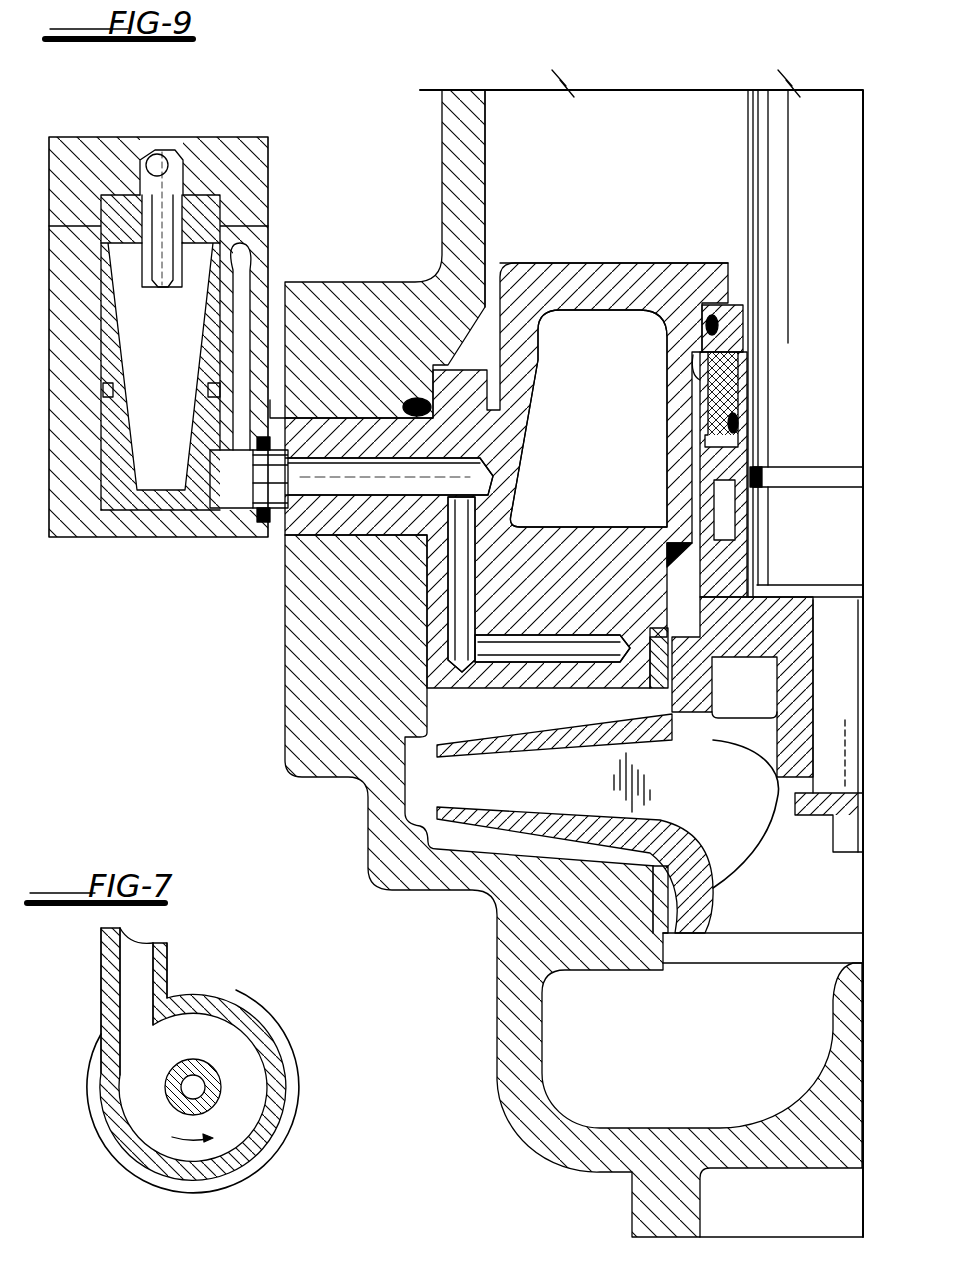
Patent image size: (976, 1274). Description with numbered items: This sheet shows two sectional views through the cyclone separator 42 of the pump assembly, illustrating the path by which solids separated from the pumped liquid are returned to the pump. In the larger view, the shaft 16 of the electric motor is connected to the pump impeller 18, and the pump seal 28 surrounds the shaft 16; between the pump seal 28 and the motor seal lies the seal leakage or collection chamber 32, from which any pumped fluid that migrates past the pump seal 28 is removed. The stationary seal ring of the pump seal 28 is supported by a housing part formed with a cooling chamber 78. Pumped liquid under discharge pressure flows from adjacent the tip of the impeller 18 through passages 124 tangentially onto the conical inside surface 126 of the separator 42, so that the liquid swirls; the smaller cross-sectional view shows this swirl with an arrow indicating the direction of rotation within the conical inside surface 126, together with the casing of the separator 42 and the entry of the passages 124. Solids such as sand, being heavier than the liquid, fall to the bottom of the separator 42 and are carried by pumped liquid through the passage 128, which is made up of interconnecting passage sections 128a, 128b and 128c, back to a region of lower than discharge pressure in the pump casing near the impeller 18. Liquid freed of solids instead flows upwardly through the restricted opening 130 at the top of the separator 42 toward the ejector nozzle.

In FIG. 9, the shaft 16 is at (848, 133).
In FIG. 9, the pump impeller 18 is at (662, 832).
In FIG. 9, the pump seal 28 is at (767, 373).
In FIG. 9, the seal leakage or collection chamber 32 is at (632, 198).
In FIG. 9, the cyclone separator 42 is at (283, 221).
In FIG. 7, the cyclone separator 42 is at (283, 1018).
In FIG. 9, the cooling chamber 78 is at (602, 437).
In FIG. 9, the passages 124 is at (250, 257).
In FIG. 7, the passages 124 is at (147, 980).
In FIG. 9, the conical inside surface 126 is at (130, 330).
In FIG. 7, the conical inside surface 126 is at (262, 1080).
In FIG. 9, the passage 128 is at (228, 503).
In FIG. 9, the passage section 128a is at (283, 497).
In FIG. 9, the passage section 128b is at (475, 617).
In FIG. 9, the passage section 128c is at (558, 655).
In FIG. 9, the restricted opening 130 is at (174, 290).